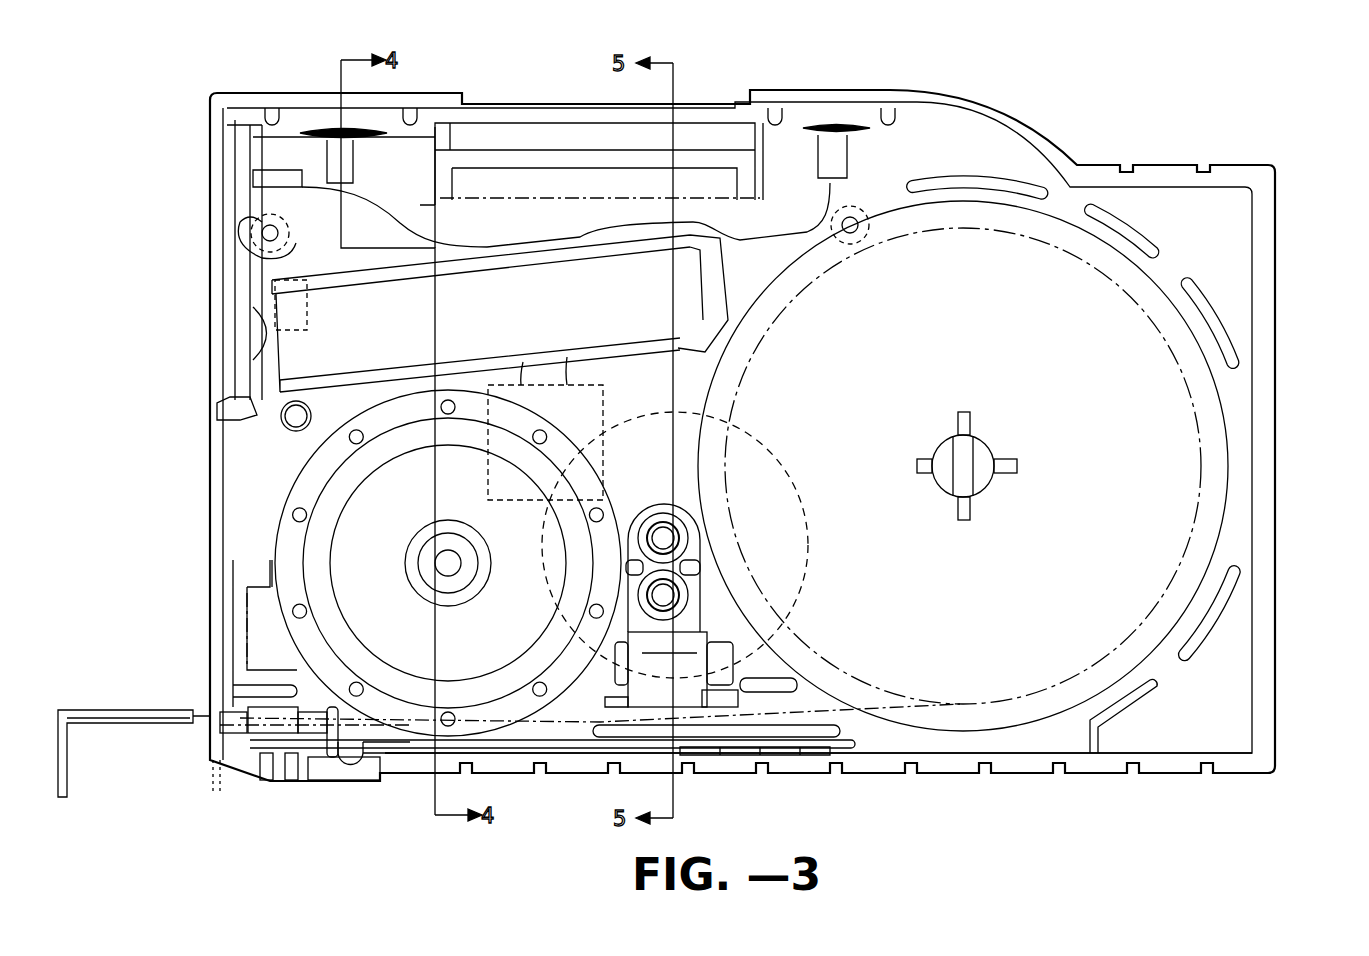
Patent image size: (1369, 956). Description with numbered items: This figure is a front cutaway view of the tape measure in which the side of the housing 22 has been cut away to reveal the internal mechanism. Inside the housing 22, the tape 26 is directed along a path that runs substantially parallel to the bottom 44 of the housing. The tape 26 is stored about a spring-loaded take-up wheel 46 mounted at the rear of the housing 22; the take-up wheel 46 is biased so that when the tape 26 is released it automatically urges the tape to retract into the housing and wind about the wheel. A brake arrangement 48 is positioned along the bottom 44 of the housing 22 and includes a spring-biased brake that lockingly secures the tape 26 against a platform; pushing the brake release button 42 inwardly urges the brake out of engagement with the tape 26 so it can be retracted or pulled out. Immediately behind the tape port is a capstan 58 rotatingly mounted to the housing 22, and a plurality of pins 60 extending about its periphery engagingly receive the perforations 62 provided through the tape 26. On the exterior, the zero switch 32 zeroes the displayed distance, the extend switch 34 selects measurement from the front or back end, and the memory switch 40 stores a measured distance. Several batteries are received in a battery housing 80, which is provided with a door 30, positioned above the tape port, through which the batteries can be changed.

The housing 22 is at (1300, 215).
The tape 26 is at (855, 707).
The door 30 is at (240, 343).
The zero switch 32 is at (230, 172).
The extend switch 34 is at (333, 128).
The memory switch 40 is at (838, 128).
The brake release button 42 is at (806, 540).
The bottom 44 is at (1072, 775).
The take-up wheel 46 is at (1222, 450).
The brake arrangement 48 is at (760, 779).
The capstan 58 is at (240, 607).
The pins 60 is at (300, 515).
The perforations 62 is at (170, 715).
The battery housing 80 is at (240, 237).